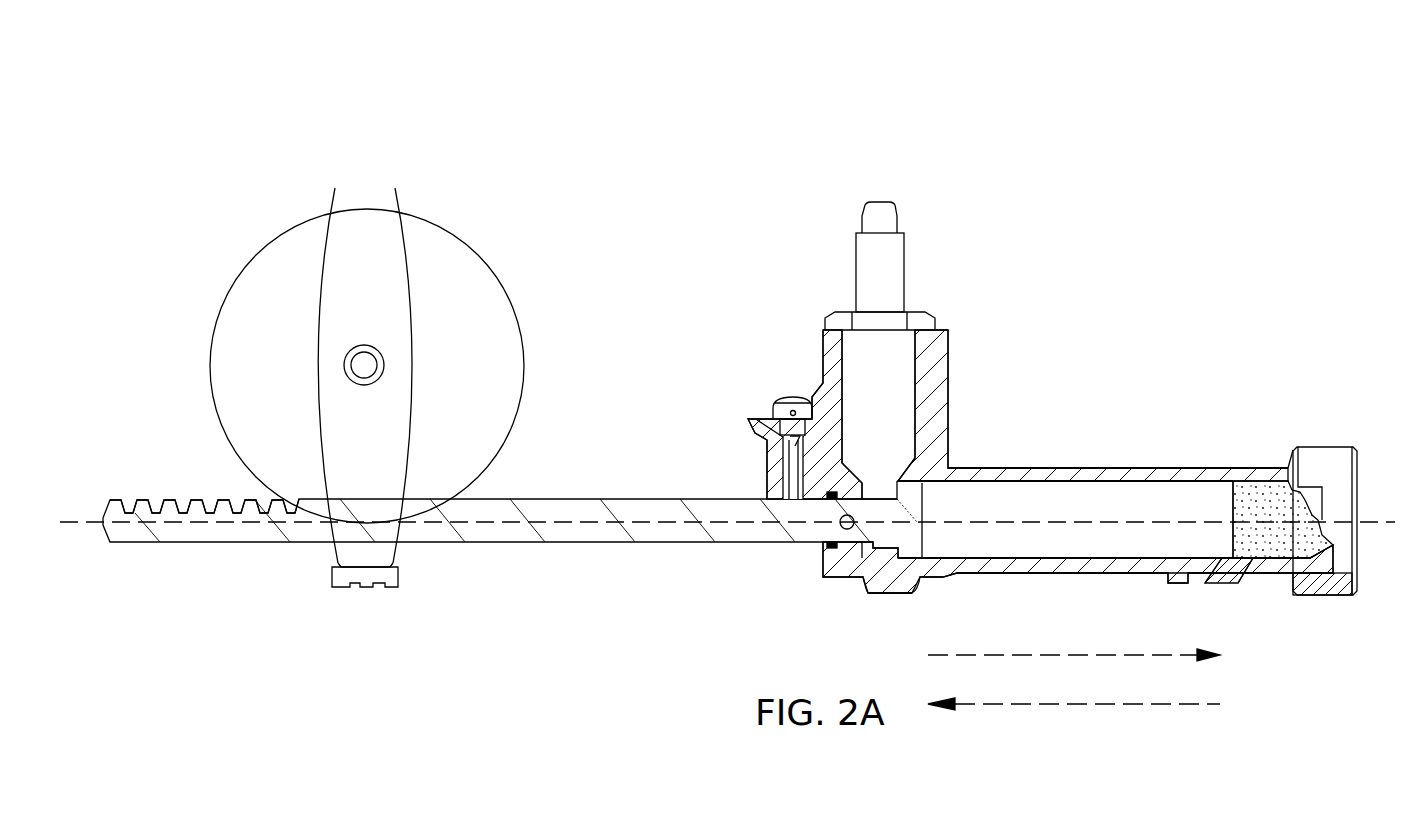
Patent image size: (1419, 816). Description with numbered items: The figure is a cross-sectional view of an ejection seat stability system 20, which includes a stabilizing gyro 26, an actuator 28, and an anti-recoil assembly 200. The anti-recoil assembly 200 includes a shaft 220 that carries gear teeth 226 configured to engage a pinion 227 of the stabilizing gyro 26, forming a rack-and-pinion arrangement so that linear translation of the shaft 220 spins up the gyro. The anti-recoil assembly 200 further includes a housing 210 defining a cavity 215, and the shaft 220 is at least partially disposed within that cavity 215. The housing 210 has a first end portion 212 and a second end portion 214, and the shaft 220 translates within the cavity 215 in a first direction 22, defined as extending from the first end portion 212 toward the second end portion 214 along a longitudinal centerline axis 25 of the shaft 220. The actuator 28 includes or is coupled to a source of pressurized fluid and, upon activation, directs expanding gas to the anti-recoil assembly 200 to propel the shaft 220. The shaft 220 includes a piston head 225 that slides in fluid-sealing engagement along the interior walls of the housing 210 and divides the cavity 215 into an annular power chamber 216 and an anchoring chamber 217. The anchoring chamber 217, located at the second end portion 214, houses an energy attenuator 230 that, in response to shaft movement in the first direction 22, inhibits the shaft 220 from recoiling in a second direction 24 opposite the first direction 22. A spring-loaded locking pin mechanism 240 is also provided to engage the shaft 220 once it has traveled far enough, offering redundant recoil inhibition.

The ejection seat stability system 20 is at (193, 118).
The stabilizing gyro 26 is at (485, 313).
The actuator 28 is at (786, 300).
The spring-loaded locking pin mechanism 240 is at (775, 412).
The shaft 220 is at (510, 495).
The gear teeth 226 is at (183, 502).
The pinion 227 is at (305, 521).
The piston head 225 is at (920, 503).
The annular power chamber 216 is at (866, 572).
The first end portion 212 is at (885, 578).
The housing 210 is at (1115, 492).
The anchoring chamber 217 is at (1023, 497).
The cavity 215 is at (1091, 517).
The energy attenuator 230 is at (1256, 503).
The second end portion 214 is at (1283, 560).
The longitudinal centerline axis 25 is at (1380, 525).
The first direction 22 is at (1005, 655).
The second direction 24 is at (1185, 705).
The anti-recoil assembly 200 is at (607, 640).